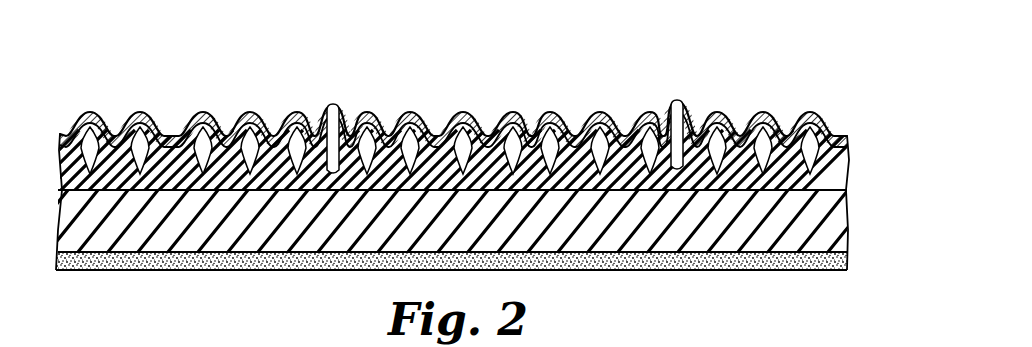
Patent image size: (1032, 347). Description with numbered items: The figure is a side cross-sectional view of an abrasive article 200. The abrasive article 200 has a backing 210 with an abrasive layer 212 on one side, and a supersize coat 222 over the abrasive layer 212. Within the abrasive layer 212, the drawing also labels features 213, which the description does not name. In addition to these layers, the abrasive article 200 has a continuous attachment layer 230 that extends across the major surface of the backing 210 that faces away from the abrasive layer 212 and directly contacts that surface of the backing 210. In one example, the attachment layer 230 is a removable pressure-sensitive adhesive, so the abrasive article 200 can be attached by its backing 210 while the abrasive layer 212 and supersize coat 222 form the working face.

The abrasive article 200 is at (799, 54).
The abrasive layer 212 is at (455, 152).
The pile yarn tufts 213 is at (332, 105).
The supersize coat 222 is at (148, 113).
The backing 210 is at (834, 212).
The continuous attachment layer 230 is at (834, 262).